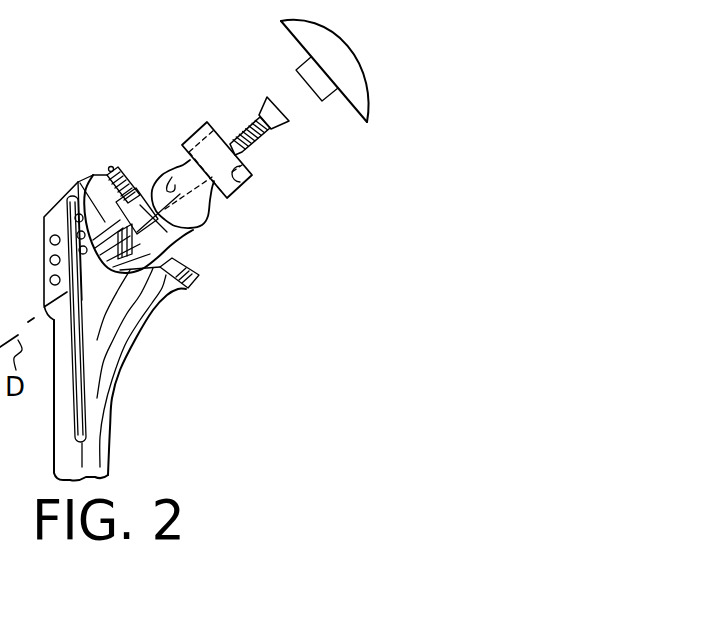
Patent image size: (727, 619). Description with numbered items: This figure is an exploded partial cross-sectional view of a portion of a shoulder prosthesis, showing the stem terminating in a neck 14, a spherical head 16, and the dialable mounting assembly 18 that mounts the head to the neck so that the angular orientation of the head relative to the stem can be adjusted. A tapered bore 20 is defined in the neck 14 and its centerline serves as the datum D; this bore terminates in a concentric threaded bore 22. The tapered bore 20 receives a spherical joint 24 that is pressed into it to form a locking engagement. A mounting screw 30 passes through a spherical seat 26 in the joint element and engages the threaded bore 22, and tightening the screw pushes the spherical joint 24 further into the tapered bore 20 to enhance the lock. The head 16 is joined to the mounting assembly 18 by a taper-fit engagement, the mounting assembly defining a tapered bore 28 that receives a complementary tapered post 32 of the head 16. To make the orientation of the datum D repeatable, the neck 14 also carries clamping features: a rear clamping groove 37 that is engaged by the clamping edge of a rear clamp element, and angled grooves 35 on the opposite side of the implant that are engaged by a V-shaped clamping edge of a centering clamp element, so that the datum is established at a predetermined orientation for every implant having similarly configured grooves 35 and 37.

The neck 14 is at (153, 283).
The spherical head 16 is at (362, 92).
The mounting assembly 18 is at (243, 188).
The tapered bore 20 is at (137, 192).
The threaded bore 22 is at (87, 183).
The spherical joint 24 is at (200, 222).
The spherical seat 26 is at (171, 185).
The tapered bore 28 is at (248, 163).
The mounting screw 30 is at (252, 113).
The tapered post 32 is at (322, 87).
The angled grooves 35 is at (183, 280).
The rear clamping groove 37 is at (98, 178).